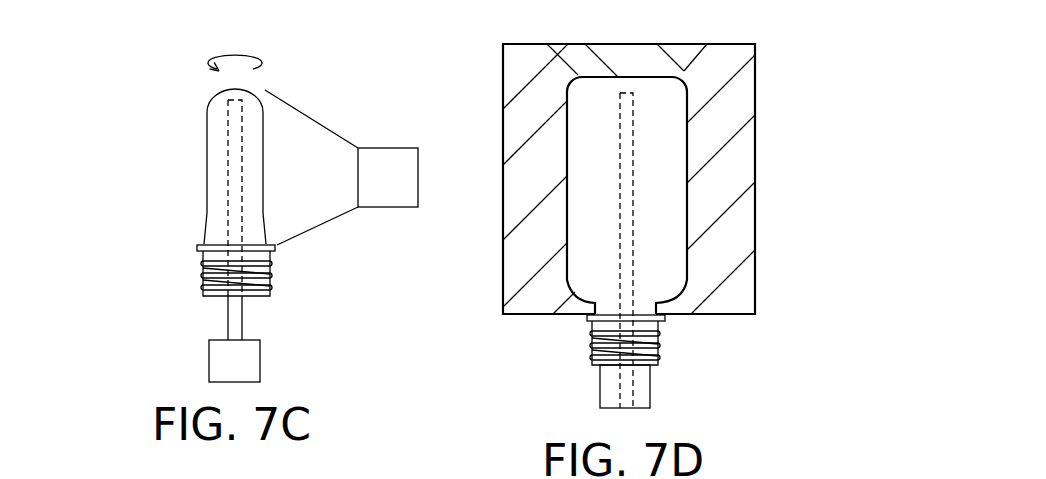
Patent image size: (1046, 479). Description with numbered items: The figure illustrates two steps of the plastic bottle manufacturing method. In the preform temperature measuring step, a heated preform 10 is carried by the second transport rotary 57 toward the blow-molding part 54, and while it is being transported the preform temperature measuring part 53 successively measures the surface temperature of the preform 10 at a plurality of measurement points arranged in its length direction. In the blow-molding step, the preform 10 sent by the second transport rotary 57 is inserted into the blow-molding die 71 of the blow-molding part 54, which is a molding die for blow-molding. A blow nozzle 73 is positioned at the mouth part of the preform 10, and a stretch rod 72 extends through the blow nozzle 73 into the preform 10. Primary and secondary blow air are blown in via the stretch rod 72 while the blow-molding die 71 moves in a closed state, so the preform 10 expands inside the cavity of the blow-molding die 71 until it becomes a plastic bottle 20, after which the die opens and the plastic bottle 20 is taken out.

In FIG. 7C, the preform 10 is at (147, 150).
In FIG. 7C, the preform temperature measuring part 53 is at (391, 157).
In FIG. 7C, the second transport rotary 57 is at (275, 330).
In FIG. 7D, the blow-molding part 54 is at (778, 49).
In FIG. 7D, the blow-molding die 71 is at (728, 172).
In FIG. 7D, the stretch rod 72 is at (633, 238).
In FIG. 7D, the plastic bottle 20 is at (647, 327).
In FIG. 7D, the blow nozzle 73 is at (640, 393).